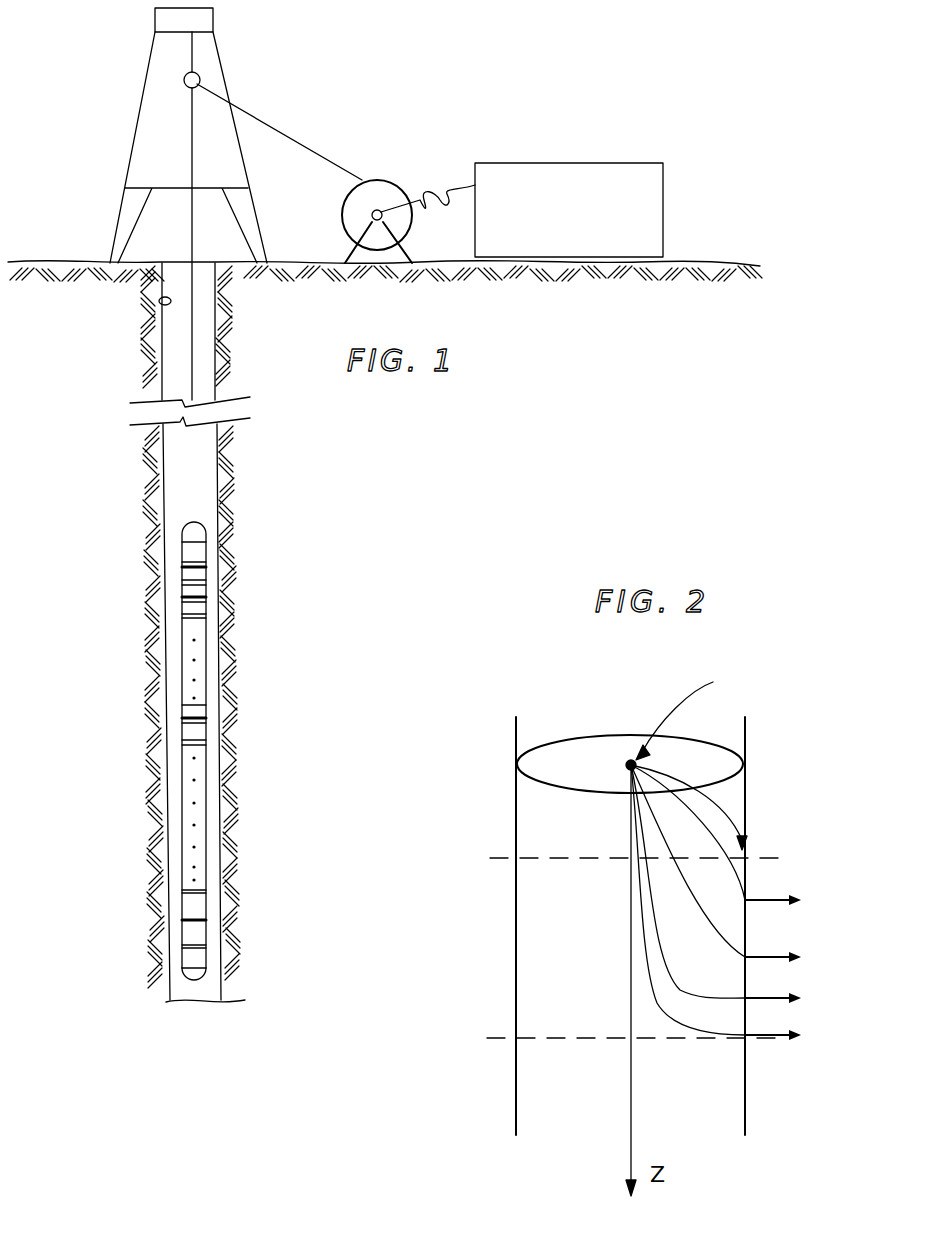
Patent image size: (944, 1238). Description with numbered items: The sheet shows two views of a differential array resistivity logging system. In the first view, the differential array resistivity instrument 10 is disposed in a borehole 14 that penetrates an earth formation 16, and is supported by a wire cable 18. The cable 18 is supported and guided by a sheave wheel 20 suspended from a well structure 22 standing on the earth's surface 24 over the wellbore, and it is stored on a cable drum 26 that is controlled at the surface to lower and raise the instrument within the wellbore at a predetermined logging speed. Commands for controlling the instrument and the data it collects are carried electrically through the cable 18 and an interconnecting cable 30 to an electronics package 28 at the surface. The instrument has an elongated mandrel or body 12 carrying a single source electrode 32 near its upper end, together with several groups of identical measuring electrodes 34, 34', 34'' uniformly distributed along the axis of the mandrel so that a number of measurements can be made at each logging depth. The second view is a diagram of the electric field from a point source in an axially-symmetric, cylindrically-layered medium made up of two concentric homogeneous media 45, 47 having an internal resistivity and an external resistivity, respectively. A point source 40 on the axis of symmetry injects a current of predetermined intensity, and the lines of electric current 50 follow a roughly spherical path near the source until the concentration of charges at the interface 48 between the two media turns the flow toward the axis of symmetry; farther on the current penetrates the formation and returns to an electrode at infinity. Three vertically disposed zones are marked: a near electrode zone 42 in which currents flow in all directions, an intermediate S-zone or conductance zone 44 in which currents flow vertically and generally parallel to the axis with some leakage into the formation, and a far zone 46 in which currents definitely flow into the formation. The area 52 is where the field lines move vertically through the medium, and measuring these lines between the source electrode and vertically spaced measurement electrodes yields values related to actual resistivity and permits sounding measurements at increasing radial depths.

In FIG. 1, the differential array resistivity instrument 10 is at (204, 720).
In FIG. 1, the elongated mandrel or body 12 is at (208, 640).
In FIG. 1, the borehole 14 is at (159, 305).
In FIG. 1, the earth formation 16 is at (302, 339).
In FIG. 1, the wire cable 18 is at (290, 130).
In FIG. 1, the sheave wheel 20 is at (184, 77).
In FIG. 1, the well structure 22 is at (130, 147).
In FIG. 1, the earth's surface 24 is at (76, 262).
In FIG. 1, the cable drum 26 is at (387, 181).
In FIG. 1, the electronics package 28 is at (538, 163).
In FIG. 1, the interconnecting cable 30 is at (437, 190).
In FIG. 1, the source electrode 32 is at (181, 571).
In FIG. 1, the measuring electrodes 34 is at (138, 625).
In FIG. 1, the measuring electrodes 34' is at (134, 729).
In FIG. 1, the measuring electrodes 34'' is at (138, 923).
In FIG. 2, the point source 40 is at (631, 758).
In FIG. 2, the near electrode zone 42 is at (489, 835).
In FIG. 2, the intermediate zone (S-zone or conductance zone) 44 is at (489, 995).
In FIG. 2, the internal homogeneous medium 45 is at (710, 1155).
In FIG. 2, the far zone 46 is at (497, 1087).
In FIG. 2, the external homogeneous medium 47 is at (821, 1155).
In FIG. 2, the interface 48 is at (744, 824).
In FIG. 2, the lines of electric current 50 is at (725, 937).
In FIG. 2, the area of vertically moving current lines 52 is at (679, 907).